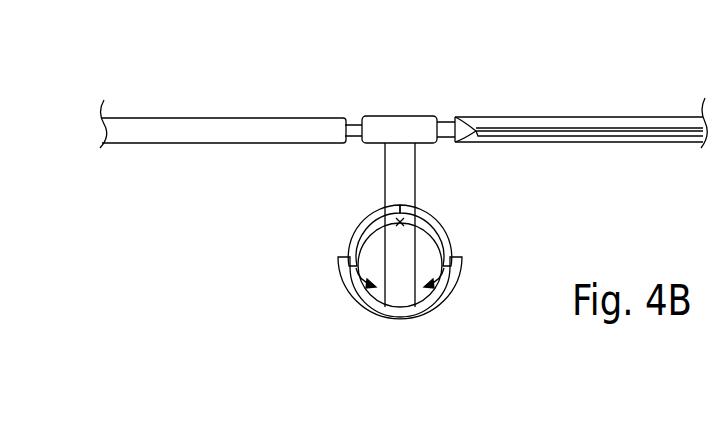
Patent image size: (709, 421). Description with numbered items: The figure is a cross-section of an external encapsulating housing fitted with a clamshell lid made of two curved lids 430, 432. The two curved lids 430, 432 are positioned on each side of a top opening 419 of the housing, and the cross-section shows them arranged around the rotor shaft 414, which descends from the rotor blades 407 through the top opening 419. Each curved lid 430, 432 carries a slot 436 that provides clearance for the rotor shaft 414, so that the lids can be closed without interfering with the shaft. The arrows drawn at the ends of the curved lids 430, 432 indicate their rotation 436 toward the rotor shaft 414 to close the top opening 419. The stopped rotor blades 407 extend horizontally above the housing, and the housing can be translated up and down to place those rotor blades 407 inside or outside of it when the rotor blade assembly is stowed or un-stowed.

The rotor blades 407 is at (228, 118).
The rotor shaft 414 is at (407, 170).
The top opening 419 is at (427, 257).
The curved lid 430 is at (367, 226).
The curved lid 432 is at (441, 219).
The slot 436 is at (442, 308).